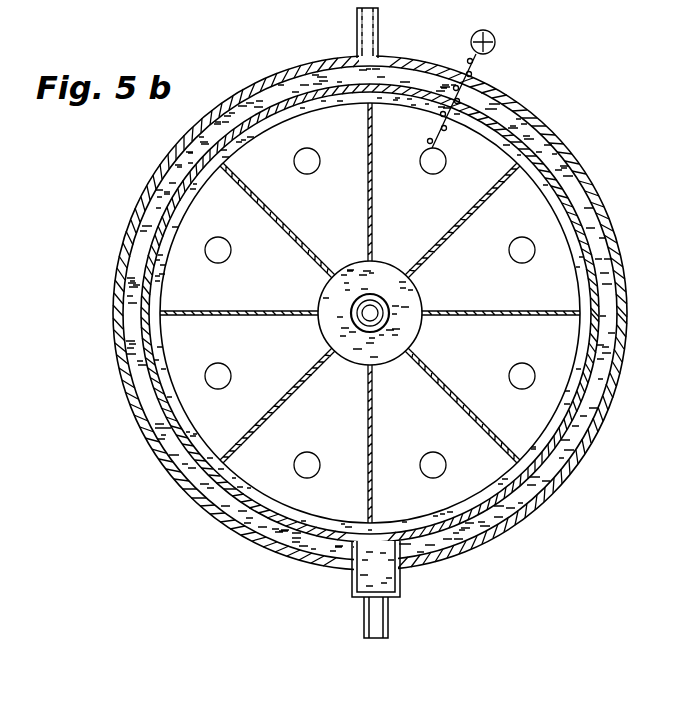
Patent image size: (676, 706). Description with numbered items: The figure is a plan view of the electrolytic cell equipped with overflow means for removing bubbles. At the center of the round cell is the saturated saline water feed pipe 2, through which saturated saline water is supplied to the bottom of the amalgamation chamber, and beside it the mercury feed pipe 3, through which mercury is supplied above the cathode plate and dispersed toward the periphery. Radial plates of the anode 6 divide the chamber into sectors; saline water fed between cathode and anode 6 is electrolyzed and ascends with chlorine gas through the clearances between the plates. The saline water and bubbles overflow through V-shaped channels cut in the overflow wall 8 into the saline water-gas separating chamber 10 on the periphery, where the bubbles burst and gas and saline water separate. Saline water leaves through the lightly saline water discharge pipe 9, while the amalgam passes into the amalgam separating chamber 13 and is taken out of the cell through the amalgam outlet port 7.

The saturated saline water feed pipe 2 is at (387, 308).
The mercury feed pipe 3 is at (372, 297).
The anode 6 is at (473, 140).
The amalgam outlet port 7 is at (381, 636).
The overflow wall 8 is at (192, 170).
The lightly saline water discharge pipe 9 is at (361, 8).
The saline water-gas separating chamber 10 is at (143, 415).
The amalgam separating chamber 13 is at (356, 592).